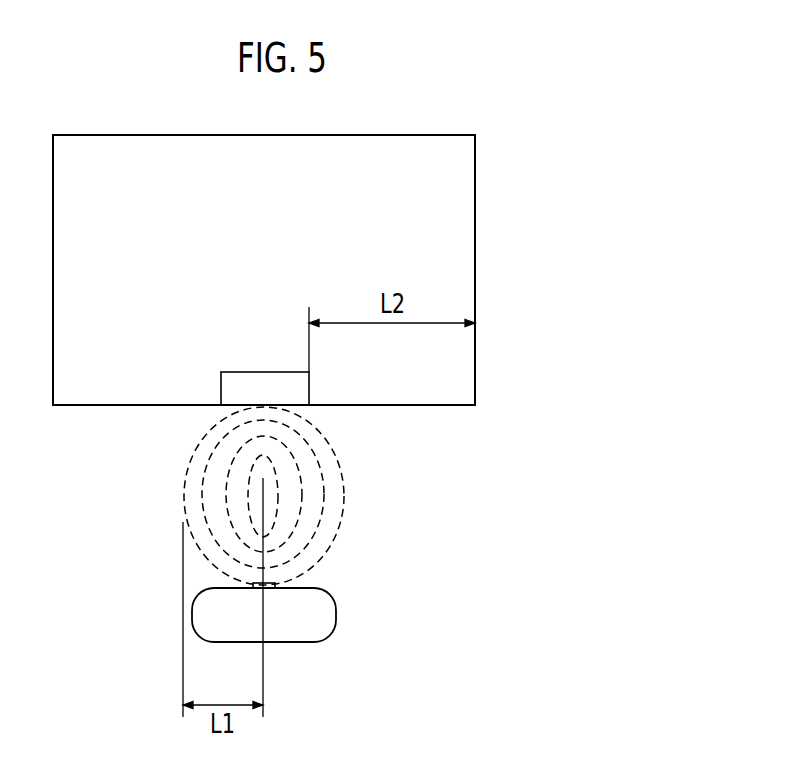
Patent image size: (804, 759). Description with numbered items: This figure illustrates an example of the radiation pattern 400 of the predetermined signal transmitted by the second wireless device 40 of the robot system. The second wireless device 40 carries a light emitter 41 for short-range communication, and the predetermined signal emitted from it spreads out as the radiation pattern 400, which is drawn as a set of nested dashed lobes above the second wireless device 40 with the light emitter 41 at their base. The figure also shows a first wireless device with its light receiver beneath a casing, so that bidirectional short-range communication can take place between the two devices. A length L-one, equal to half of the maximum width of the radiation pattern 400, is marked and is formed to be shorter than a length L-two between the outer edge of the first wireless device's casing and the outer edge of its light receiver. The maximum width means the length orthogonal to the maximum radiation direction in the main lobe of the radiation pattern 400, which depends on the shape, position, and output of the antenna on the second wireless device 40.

The radiation pattern 400 is at (345, 493).
The light emitter 41 is at (275, 585).
The second wireless device 40 is at (336, 621).